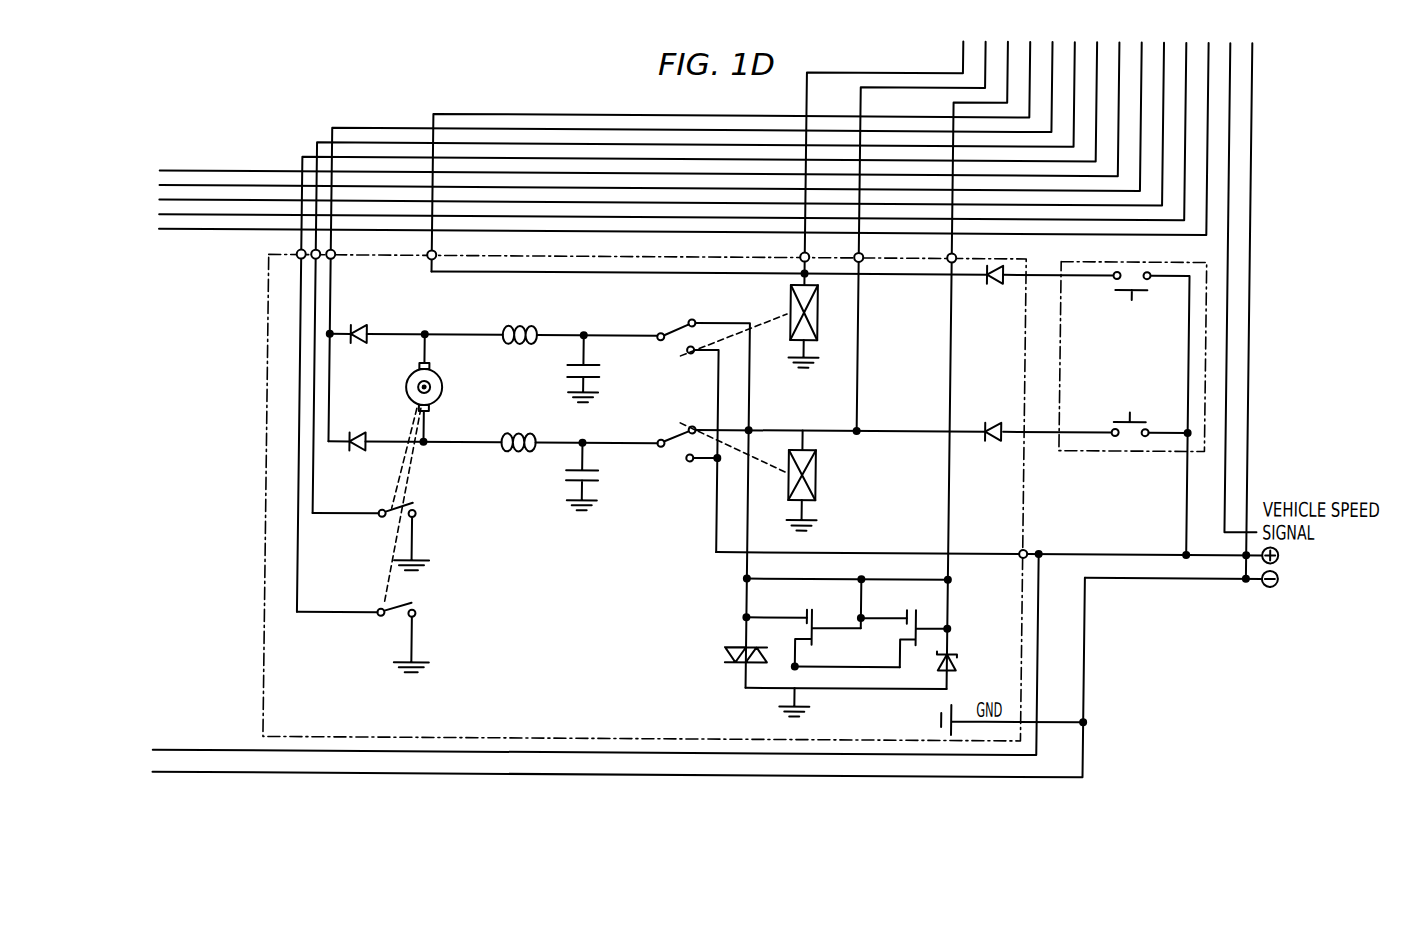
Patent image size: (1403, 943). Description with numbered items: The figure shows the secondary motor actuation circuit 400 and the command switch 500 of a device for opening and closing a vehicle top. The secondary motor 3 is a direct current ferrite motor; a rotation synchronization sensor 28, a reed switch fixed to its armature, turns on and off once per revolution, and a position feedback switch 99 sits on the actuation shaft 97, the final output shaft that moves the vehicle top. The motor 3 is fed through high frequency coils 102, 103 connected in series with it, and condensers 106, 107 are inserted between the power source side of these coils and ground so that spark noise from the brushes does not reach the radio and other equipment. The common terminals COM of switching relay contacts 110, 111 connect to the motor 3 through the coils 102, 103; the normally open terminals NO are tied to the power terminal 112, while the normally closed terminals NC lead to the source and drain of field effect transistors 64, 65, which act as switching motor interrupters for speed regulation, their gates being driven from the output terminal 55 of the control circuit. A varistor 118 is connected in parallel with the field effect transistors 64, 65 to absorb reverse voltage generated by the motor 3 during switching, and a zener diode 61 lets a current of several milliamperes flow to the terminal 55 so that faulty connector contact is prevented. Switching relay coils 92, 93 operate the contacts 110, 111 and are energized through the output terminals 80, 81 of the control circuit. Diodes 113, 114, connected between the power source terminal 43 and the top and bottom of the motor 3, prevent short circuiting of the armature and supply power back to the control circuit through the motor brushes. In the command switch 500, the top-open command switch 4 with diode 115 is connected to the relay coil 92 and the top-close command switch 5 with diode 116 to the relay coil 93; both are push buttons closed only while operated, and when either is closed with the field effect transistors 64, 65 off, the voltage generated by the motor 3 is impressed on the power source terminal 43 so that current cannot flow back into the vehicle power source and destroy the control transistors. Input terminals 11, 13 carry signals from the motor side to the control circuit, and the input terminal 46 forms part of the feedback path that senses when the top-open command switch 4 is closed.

The secondary motor 3 is at (407, 380).
The top-open command switch 4 is at (1114, 281).
The top-close command switch 5 is at (1114, 424).
The input terminal 11 is at (298, 251).
The input terminal 13 is at (313, 262).
The rotation synchronization sensor 28 is at (399, 622).
The power source terminal 43 is at (331, 251).
The input terminal 46 is at (430, 251).
The output terminal 55 is at (949, 252).
The zener diode 61 is at (959, 665).
The field effect transistor 64 is at (807, 609).
The field effect transistor 65 is at (908, 609).
The output terminal 80 is at (801, 252).
The output terminal 81 is at (856, 252).
The switching relay coil 92 is at (817, 320).
The switching relay coil 93 is at (817, 484).
The actuation shaft 97 is at (413, 403).
The position feedback switch 99 is at (387, 522).
The high frequency coil 102 is at (519, 326).
The high frequency coil 103 is at (519, 434).
The condenser 106 is at (601, 372).
The condenser 107 is at (599, 480).
The switching relay contact 110 is at (677, 349).
The switching relay contact 111 is at (678, 452).
The power terminal 112 is at (1023, 547).
The diode 113 is at (362, 326).
The diode 114 is at (363, 453).
The diode 115 is at (1002, 283).
The diode 116 is at (1001, 421).
The varistor 118 is at (728, 655).
The secondary motor actuation circuit 400 is at (266, 277).
The command switch 500 is at (1108, 449).